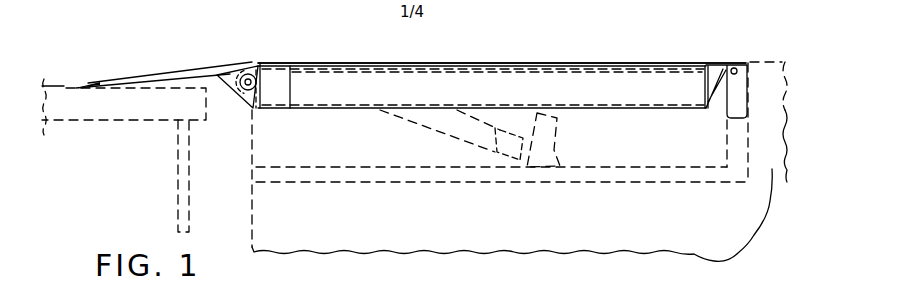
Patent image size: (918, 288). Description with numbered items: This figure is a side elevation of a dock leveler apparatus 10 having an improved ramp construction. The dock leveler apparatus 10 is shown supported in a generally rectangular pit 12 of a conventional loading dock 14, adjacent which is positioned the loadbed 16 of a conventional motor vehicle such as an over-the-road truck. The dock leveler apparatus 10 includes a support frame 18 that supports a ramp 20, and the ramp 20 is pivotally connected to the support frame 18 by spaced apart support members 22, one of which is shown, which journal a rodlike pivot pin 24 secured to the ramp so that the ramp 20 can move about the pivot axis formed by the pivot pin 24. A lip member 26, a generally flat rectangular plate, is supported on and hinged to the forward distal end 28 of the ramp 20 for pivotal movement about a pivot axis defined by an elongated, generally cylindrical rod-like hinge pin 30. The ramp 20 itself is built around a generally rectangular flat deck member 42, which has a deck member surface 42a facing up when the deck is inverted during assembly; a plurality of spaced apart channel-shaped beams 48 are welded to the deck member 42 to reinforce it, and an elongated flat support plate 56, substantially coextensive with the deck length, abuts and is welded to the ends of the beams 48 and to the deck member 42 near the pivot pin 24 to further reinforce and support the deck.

The dock leveler apparatus 10 is at (495, 55).
The pit 12 is at (383, 185).
The loading dock 14 is at (760, 58).
The loadbed 16 is at (86, 58).
The support frame 18 is at (580, 166).
The ramp 20 is at (540, 59).
The support members 22 is at (736, 91).
The pivot pin 24 is at (734, 67).
The lip member 26 is at (158, 70).
The forward distal end 28 is at (243, 109).
The hinge pin 30 is at (249, 74).
The deck member 42 is at (380, 62).
The deck member surface 42a is at (569, 70).
The beams 48 is at (332, 100).
The support plate 56 is at (712, 80).